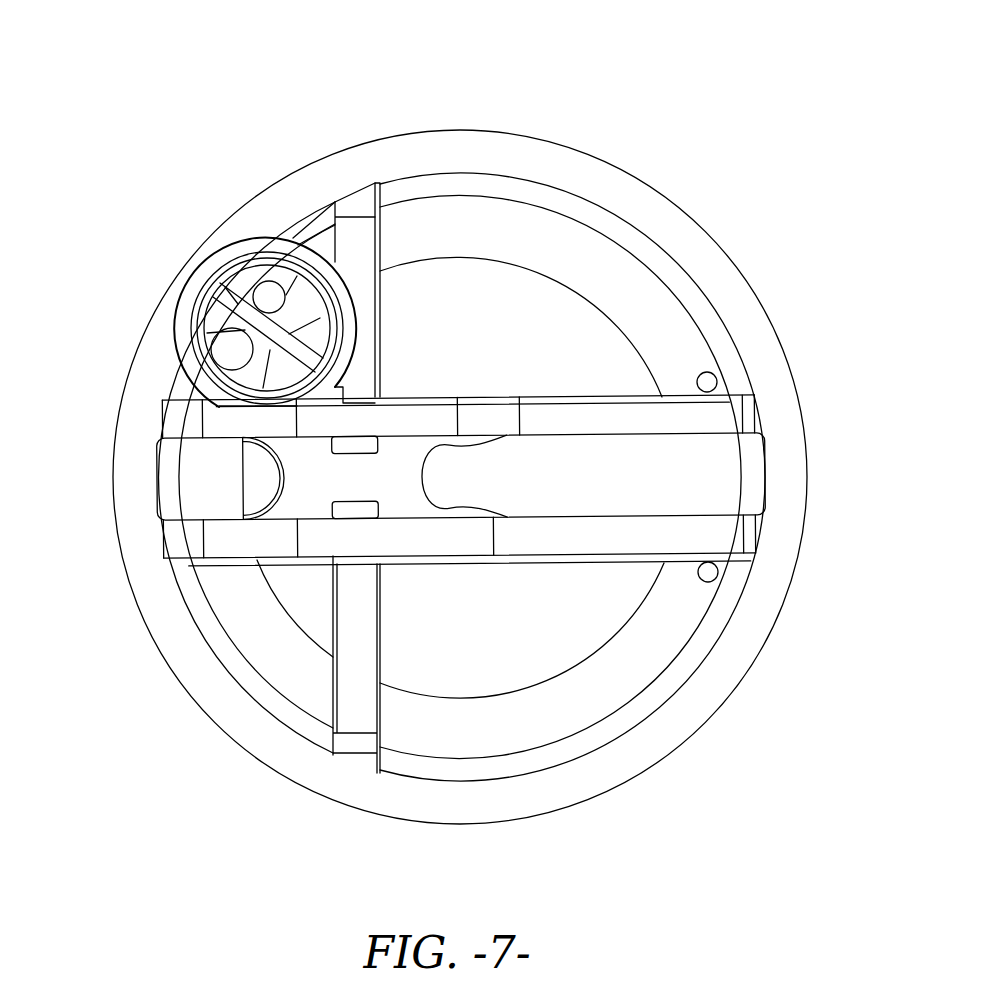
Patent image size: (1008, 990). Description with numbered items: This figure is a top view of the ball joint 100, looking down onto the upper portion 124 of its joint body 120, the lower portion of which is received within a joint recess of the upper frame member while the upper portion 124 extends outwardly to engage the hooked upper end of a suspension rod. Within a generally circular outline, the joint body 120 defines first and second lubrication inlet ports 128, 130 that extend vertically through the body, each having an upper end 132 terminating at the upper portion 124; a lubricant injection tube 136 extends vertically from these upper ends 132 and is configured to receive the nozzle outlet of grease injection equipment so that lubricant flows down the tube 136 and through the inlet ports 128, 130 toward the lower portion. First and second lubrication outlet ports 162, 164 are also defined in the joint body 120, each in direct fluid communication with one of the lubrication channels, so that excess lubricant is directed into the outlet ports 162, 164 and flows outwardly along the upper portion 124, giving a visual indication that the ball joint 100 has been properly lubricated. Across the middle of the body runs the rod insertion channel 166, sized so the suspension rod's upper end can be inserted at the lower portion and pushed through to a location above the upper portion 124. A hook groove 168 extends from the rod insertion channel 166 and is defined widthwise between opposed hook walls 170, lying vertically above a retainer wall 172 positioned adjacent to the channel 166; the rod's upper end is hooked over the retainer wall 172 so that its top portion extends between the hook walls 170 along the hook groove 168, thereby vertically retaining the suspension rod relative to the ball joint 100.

The ball joint 100 is at (238, 80).
The joint body 120 is at (624, 161).
The upper portion 124 is at (493, 223).
The first lubrication inlet port 128 is at (225, 354).
The second lubrication inlet port 130 is at (270, 290).
The upper end 132 is at (290, 242).
The lubricant injection tube 136 is at (288, 252).
The first lubrication outlet port 162 is at (708, 582).
The second lubrication outlet port 164 is at (707, 371).
The rod insertion channel 166 is at (559, 468).
The hook groove 168 is at (390, 469).
The hook walls 170 is at (477, 418).
The retainer wall 172 is at (408, 476).